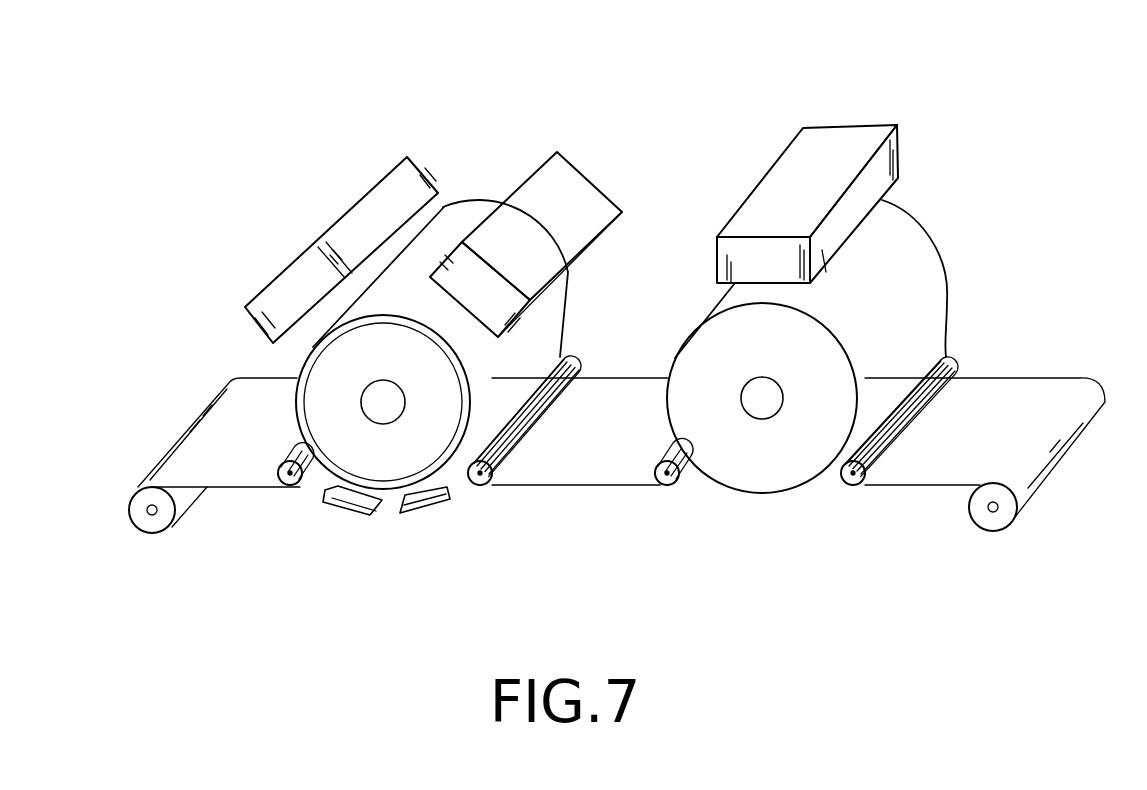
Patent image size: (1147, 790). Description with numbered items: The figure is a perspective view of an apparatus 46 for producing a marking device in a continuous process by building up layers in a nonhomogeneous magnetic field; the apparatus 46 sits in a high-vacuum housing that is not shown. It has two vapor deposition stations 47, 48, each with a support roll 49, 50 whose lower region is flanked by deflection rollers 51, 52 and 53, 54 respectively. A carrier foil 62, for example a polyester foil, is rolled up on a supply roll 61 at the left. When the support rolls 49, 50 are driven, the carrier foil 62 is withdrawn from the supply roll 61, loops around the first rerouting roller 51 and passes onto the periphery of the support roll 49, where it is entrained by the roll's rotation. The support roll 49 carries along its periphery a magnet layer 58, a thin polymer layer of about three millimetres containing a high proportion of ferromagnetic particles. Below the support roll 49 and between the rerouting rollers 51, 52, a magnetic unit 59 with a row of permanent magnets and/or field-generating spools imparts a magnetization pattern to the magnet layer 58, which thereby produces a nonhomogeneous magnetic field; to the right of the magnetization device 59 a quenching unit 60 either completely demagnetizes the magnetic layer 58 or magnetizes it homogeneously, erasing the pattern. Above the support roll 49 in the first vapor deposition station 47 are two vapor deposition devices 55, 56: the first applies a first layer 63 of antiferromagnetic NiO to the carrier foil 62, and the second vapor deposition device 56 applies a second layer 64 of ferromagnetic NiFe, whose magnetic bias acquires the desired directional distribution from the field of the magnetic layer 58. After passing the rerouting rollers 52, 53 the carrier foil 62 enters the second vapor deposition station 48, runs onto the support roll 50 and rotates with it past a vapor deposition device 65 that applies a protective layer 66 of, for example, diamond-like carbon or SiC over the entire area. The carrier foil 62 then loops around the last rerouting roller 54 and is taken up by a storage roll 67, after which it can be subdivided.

The apparatus 46 is at (1024, 155).
The first vapor deposition station 47 is at (501, 140).
The second vapor deposition station 48 is at (935, 151).
The support roll 49 is at (330, 453).
The support roll 50 is at (783, 470).
The deflection roller 51 is at (293, 485).
The deflection roller 52 is at (492, 486).
The deflection roller 53 is at (667, 487).
The deflection roller 54 is at (857, 487).
The vapor deposition device 55 is at (407, 175).
The second vapor deposition device 56 is at (552, 167).
The magnet layer 58 is at (388, 500).
The magnetic unit 59 is at (350, 513).
The quenching unit 60 is at (423, 505).
The supply roll 61 is at (152, 533).
The carrier foil 62 is at (213, 437).
The first layer 63 is at (450, 223).
The second layer 64 is at (558, 317).
The vapor deposition device 65 is at (835, 145).
The protective layer 66 is at (923, 273).
The storage roll 67 is at (993, 520).